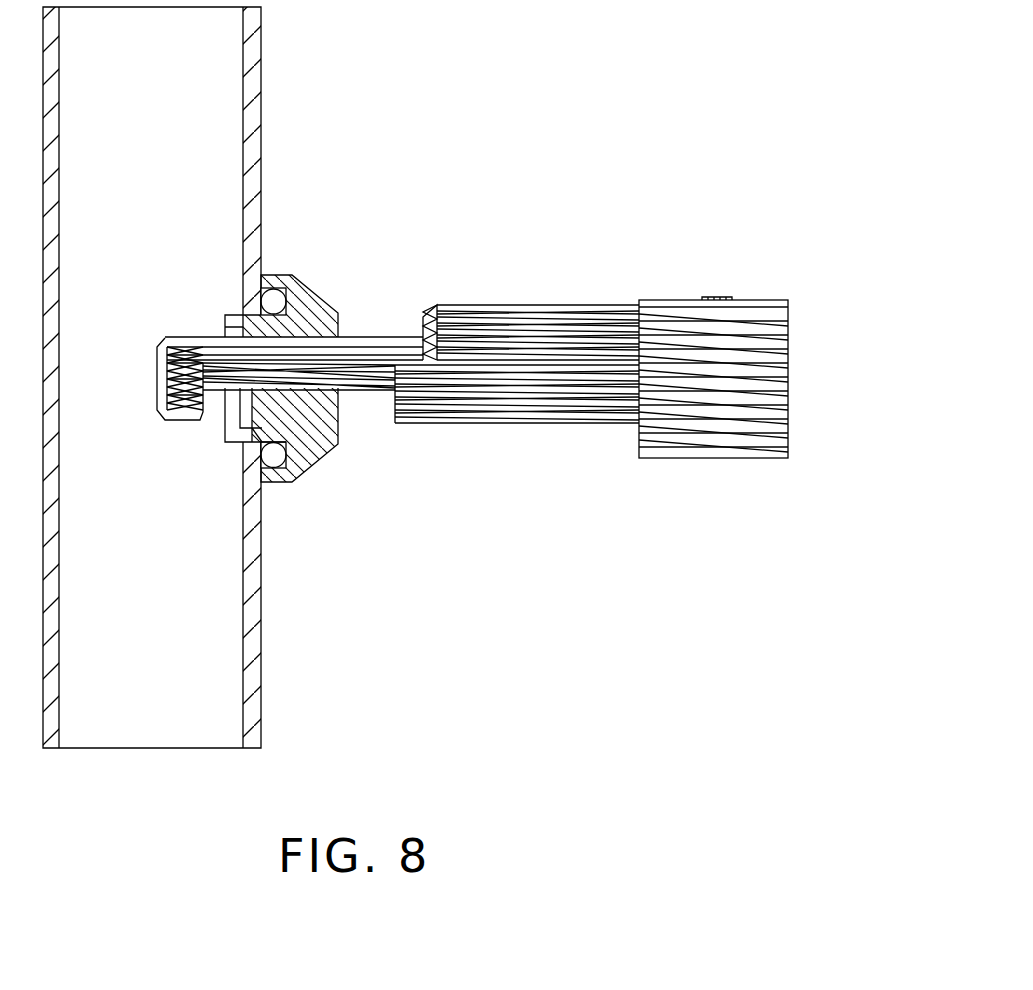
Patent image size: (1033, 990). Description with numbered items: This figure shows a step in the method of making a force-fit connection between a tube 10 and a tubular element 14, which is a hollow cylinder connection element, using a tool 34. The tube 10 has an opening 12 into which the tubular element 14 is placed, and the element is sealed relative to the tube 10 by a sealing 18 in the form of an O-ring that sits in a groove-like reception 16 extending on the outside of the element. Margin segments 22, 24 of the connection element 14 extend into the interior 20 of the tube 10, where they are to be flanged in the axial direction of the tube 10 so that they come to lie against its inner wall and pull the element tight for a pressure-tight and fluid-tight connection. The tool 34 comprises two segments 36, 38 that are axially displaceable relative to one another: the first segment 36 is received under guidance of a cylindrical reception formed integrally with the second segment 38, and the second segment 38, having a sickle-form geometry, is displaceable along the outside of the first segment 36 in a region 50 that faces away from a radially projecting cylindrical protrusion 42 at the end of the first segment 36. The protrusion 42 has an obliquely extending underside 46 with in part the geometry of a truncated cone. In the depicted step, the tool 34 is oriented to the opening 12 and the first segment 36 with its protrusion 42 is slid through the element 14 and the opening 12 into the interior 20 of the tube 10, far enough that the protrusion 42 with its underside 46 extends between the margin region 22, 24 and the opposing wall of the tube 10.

The tube 10 is at (253, 90).
The opening 12 is at (247, 443).
The tubular element 14 is at (305, 300).
The reception 16 is at (300, 467).
The sealing 18 is at (274, 458).
The interior 20 is at (177, 680).
The margin segment 22 is at (203, 278).
The margin segment 24 is at (232, 315).
The tool 34 is at (663, 198).
The first segment 36 is at (367, 390).
The second segment 38 is at (533, 305).
The protrusion 42 is at (183, 357).
The underside 46 is at (207, 412).
The region 50 is at (390, 335).